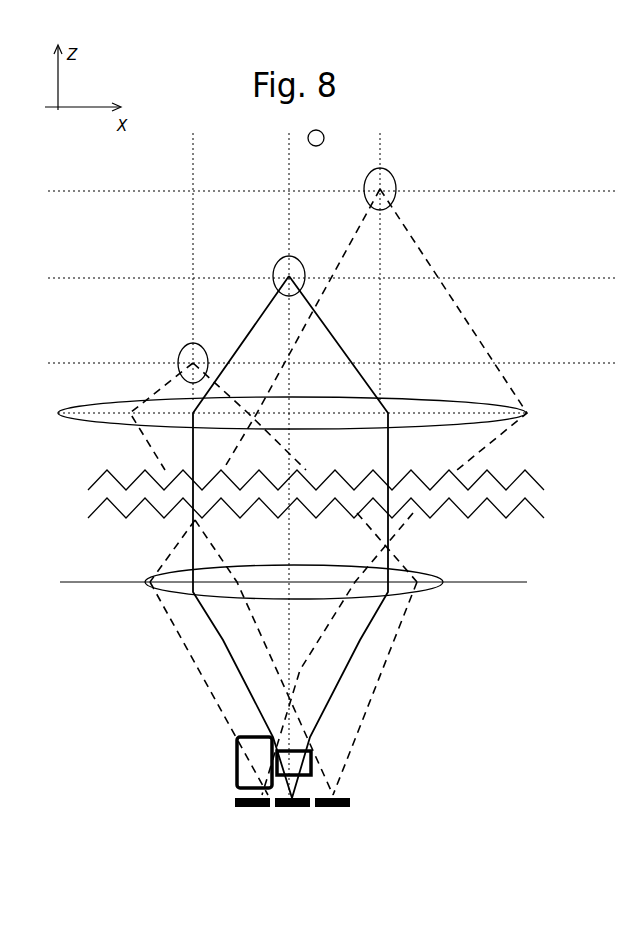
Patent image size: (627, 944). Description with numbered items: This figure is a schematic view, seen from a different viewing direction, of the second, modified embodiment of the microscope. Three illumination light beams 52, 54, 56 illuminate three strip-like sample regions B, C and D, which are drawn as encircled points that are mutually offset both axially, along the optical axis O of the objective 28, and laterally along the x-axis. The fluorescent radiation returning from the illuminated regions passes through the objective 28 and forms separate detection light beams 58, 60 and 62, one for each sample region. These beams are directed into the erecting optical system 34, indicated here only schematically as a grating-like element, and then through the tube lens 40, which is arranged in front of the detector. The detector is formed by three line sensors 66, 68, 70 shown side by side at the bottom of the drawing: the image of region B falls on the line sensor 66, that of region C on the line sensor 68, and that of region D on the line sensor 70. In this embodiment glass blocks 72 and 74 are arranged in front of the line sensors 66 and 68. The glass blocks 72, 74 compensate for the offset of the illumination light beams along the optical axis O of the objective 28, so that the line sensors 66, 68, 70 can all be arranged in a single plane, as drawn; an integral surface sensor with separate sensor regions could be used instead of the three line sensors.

The objective 28 is at (527, 413).
The erecting optical system 34 is at (547, 496).
The tube lens 40 is at (420, 579).
The illumination light beam 52 is at (397, 178).
The illumination light beam 54 is at (274, 270).
The illumination light beam 56 is at (178, 352).
The detection light beam 58 is at (190, 650).
The detection light beam 60 is at (243, 680).
The detection light beam 62 is at (392, 656).
The line sensor 66 is at (250, 807).
The line sensor 68 is at (288, 807).
The line sensor 70 is at (330, 807).
The glass block 72 is at (236, 771).
The glass block 74 is at (311, 753).